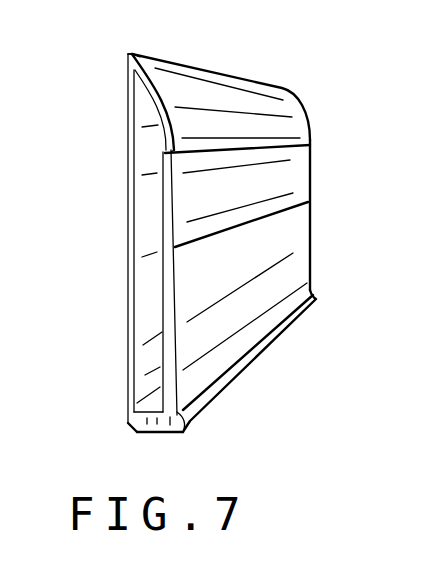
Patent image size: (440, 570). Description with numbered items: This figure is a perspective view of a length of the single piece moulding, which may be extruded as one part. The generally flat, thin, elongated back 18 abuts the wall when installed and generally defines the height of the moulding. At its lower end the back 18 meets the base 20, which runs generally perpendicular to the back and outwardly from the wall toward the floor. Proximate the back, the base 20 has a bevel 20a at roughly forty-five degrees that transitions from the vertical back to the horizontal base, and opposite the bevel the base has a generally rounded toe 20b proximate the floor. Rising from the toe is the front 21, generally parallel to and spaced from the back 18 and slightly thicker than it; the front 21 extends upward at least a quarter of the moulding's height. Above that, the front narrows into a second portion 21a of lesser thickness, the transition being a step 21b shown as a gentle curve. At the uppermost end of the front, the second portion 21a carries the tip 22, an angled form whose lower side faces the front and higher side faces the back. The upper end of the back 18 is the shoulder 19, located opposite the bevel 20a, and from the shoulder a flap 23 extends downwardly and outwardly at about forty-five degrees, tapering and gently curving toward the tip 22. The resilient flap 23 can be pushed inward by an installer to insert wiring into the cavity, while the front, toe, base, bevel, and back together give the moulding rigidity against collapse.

The back 18 is at (122, 250).
The shoulder 19 is at (137, 52).
The base 20 is at (167, 428).
The bevel 20a is at (128, 423).
The toe 20b is at (283, 338).
The front 21 is at (287, 250).
The second portion 21a is at (287, 172).
The step 21b is at (300, 205).
The tip 22 is at (300, 150).
The flap 23 is at (258, 108).